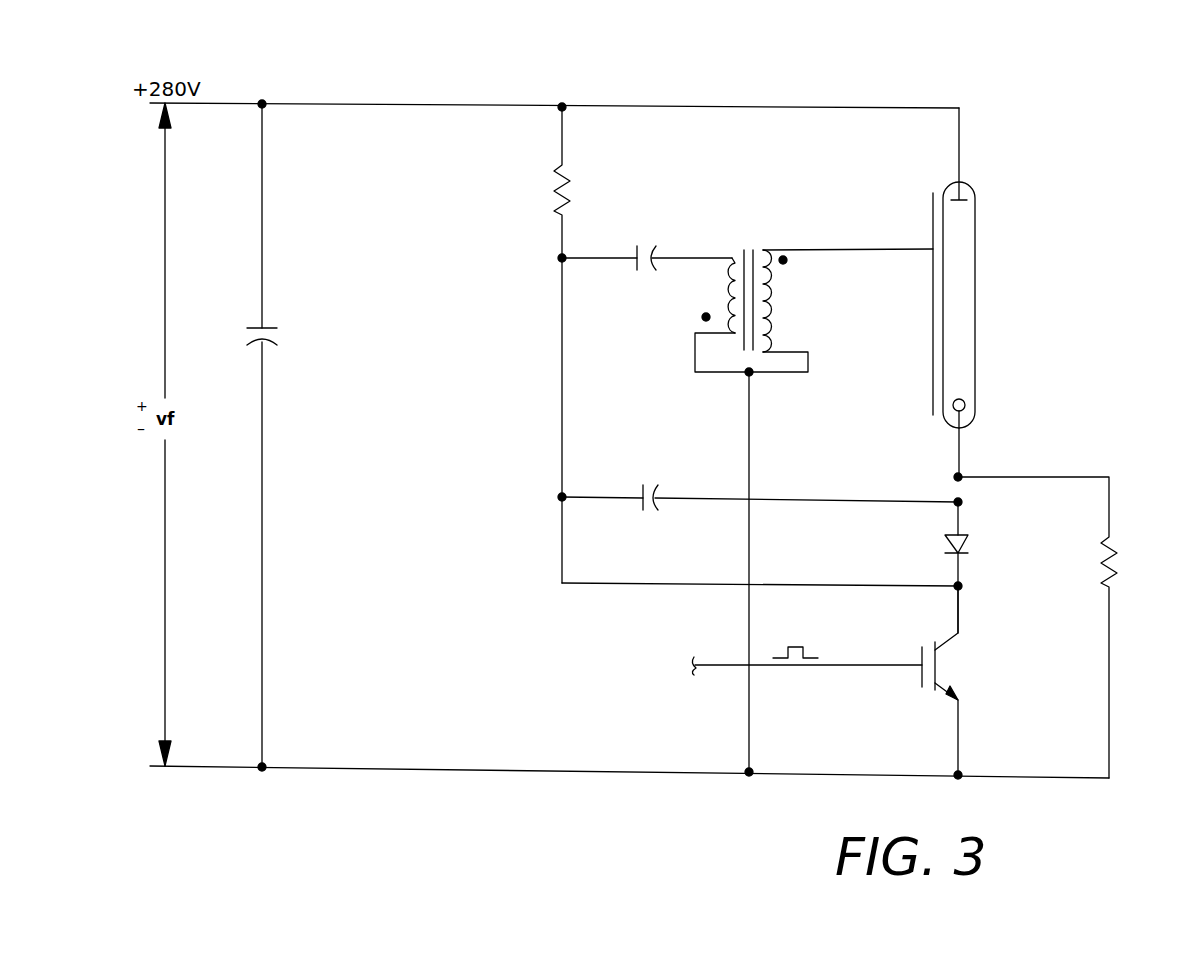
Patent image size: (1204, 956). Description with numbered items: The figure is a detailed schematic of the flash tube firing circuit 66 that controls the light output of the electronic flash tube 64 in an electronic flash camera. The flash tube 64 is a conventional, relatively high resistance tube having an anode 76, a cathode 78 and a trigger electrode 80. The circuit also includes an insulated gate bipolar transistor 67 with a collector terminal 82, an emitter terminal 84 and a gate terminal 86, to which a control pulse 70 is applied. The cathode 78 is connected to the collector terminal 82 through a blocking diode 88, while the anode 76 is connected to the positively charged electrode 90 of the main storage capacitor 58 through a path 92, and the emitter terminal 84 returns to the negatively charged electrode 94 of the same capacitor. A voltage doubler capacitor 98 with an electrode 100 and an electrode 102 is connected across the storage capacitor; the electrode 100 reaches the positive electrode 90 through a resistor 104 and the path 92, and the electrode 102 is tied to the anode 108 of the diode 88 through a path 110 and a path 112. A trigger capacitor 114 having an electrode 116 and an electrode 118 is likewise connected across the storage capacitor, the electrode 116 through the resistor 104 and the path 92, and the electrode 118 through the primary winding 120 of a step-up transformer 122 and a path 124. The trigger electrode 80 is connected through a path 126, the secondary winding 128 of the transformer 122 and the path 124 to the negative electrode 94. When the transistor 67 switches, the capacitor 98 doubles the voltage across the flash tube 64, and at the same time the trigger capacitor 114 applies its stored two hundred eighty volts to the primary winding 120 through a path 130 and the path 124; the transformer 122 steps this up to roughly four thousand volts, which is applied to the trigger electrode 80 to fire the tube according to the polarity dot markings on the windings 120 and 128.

The main storage capacitor 58 is at (247, 435).
The electronic flash tube 64 is at (952, 292).
The flash tube firing circuit 66 is at (386, 66).
The insulated gate bipolar transistor 67 is at (862, 680).
The control pulse 70 is at (797, 645).
The anode 76 is at (972, 193).
The cathode 78 is at (965, 402).
The trigger electrode 80 is at (932, 209).
The collector terminal 82 is at (958, 615).
The emitter terminal 84 is at (953, 725).
The gate terminal 86 is at (870, 665).
The blocking diode 88 is at (978, 556).
The positively charged electrode 90 is at (268, 325).
The path 92 is at (474, 107).
The negatively charged electrode 94 is at (273, 342).
The voltage doubler capacitor 98 is at (650, 514).
The electrode 100 is at (648, 492).
The electrode 102 is at (658, 488).
The resistor 104 is at (565, 188).
The anode 108 is at (957, 567).
The path 110 is at (878, 614).
The path 112 is at (956, 521).
The trigger capacitor 114 is at (647, 253).
The electrode 116 is at (633, 256).
The electrode 118 is at (678, 290).
The primary winding 120 is at (722, 297).
The step-up transformer 122 is at (748, 283).
The path 124 is at (749, 430).
The path 126 is at (830, 249).
The secondary winding 128 is at (773, 314).
The path 130 is at (640, 583).